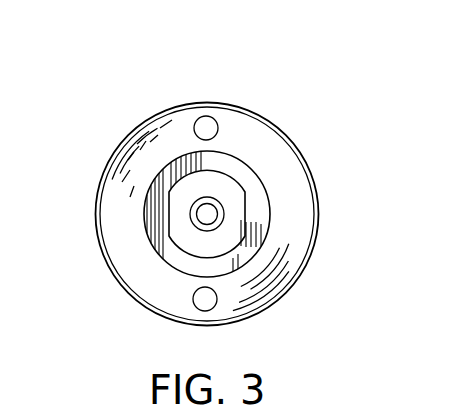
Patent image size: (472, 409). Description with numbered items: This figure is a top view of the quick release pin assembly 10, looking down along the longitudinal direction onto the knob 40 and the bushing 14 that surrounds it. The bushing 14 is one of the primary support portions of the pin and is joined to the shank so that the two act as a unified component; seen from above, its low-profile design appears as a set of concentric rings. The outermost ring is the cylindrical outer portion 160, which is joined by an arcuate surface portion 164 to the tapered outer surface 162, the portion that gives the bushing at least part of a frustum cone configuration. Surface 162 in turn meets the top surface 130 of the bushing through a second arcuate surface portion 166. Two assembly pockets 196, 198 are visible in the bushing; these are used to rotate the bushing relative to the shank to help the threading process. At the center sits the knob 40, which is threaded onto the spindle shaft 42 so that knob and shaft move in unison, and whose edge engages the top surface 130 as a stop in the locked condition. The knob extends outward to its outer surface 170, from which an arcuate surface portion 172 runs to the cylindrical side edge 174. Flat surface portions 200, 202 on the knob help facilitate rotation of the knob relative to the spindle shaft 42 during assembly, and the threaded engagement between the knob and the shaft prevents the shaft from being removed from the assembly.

The quick release pin assembly 10 is at (289, 68).
The bushing 14 is at (323, 145).
The knob 40 is at (175, 172).
The spindle shaft 42 is at (218, 232).
The top surface of bushing 130 is at (167, 257).
The outer cylindrical portion of bushing 160 is at (303, 272).
The tapered outer surface of bushing 162 is at (293, 192).
The arcuate surface portion 164 is at (308, 245).
The arcuate surface portion 166 is at (143, 188).
The outer surface of knob 170 is at (192, 212).
The arcuate surface portion of knob 172 is at (212, 183).
The side edge of knob 174 is at (227, 234).
The assembly pocket 196 is at (198, 304).
The assembly pocket 198 is at (198, 112).
The flat surface portion 200 is at (158, 228).
The flat surface portion 202 is at (244, 209).